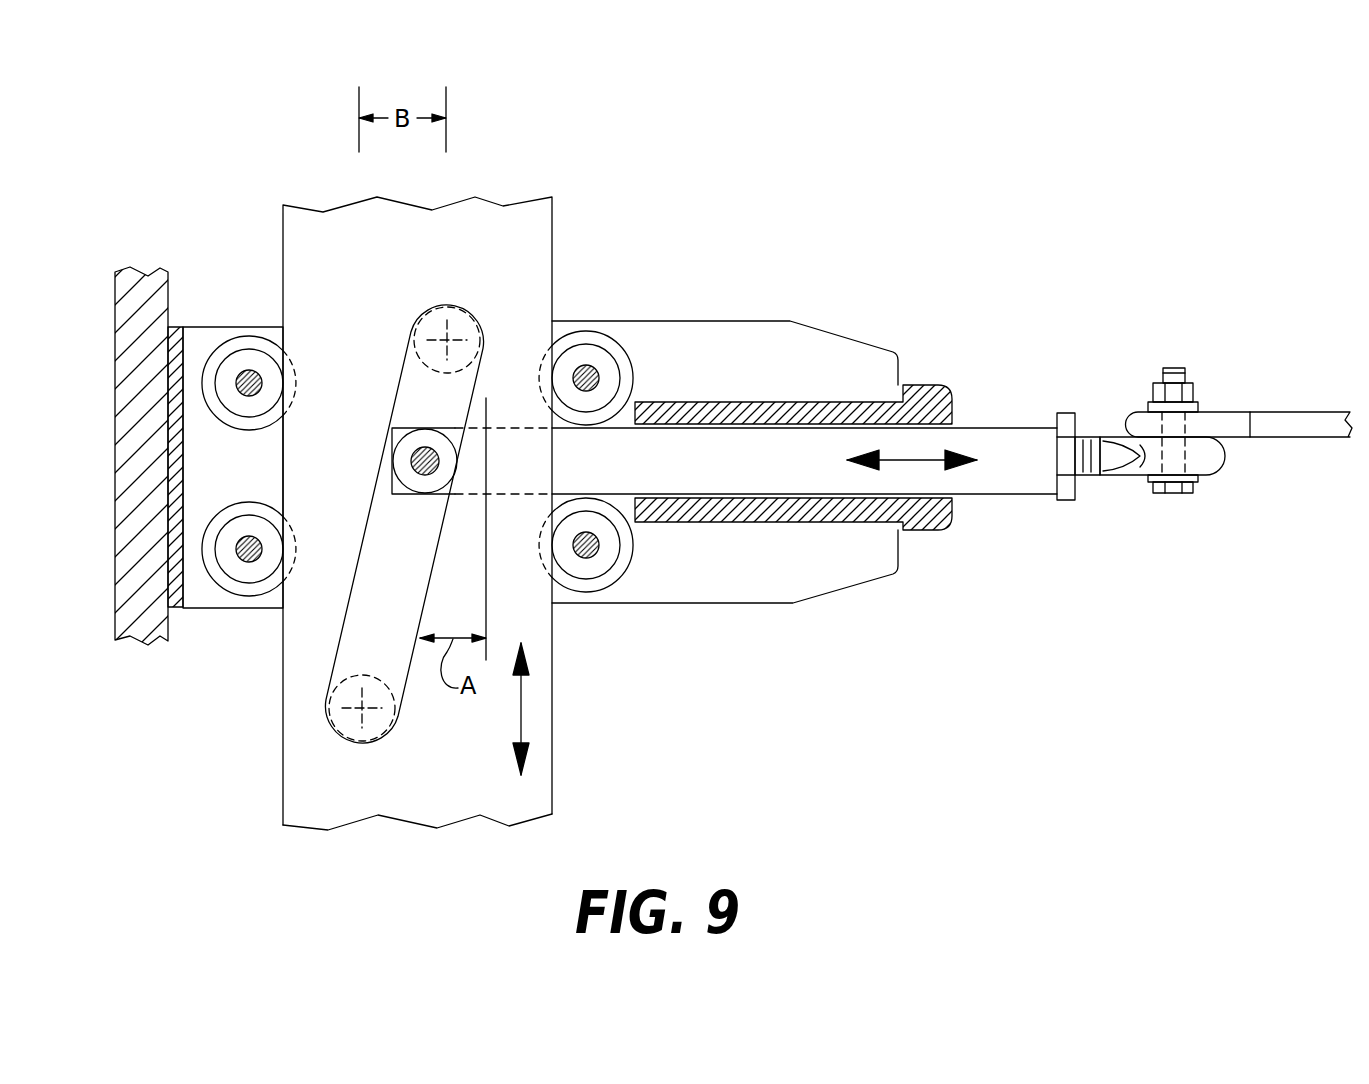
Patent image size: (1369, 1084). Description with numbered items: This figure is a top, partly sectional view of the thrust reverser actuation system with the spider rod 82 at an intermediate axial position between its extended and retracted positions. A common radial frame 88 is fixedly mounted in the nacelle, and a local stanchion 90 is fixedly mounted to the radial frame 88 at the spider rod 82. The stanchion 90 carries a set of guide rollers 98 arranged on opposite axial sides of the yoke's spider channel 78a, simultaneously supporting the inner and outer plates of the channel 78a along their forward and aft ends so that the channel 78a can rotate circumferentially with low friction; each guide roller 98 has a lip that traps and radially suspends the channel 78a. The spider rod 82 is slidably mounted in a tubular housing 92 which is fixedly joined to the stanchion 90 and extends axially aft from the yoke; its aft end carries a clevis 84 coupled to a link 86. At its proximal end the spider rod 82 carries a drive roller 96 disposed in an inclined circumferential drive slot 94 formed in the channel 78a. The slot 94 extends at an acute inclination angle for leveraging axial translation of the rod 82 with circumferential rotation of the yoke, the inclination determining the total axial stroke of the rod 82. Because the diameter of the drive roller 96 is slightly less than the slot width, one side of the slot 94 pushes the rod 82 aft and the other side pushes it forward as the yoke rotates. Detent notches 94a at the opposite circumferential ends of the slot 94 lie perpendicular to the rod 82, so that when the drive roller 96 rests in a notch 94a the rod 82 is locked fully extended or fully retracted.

The spider channel 78a is at (429, 257).
The spider rod 82 is at (736, 477).
The clevis 84 is at (1120, 476).
The link 86 is at (1274, 412).
The radial frame 88 is at (148, 648).
The stanchion 90 is at (227, 327).
The tubular housing 92 is at (730, 522).
The drive slot 94 is at (350, 628).
The detent notch 94a is at (412, 340).
The drive roller 96 is at (426, 490).
The guide roller 98 is at (213, 412).